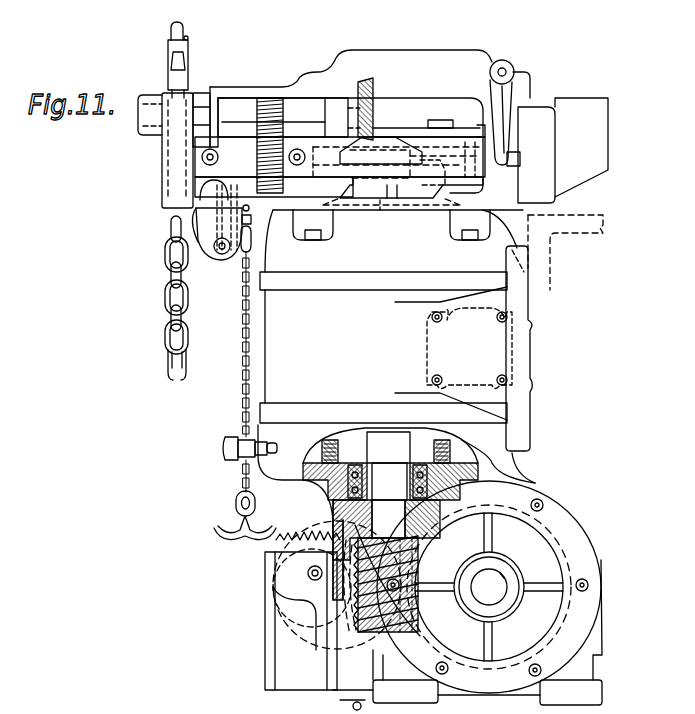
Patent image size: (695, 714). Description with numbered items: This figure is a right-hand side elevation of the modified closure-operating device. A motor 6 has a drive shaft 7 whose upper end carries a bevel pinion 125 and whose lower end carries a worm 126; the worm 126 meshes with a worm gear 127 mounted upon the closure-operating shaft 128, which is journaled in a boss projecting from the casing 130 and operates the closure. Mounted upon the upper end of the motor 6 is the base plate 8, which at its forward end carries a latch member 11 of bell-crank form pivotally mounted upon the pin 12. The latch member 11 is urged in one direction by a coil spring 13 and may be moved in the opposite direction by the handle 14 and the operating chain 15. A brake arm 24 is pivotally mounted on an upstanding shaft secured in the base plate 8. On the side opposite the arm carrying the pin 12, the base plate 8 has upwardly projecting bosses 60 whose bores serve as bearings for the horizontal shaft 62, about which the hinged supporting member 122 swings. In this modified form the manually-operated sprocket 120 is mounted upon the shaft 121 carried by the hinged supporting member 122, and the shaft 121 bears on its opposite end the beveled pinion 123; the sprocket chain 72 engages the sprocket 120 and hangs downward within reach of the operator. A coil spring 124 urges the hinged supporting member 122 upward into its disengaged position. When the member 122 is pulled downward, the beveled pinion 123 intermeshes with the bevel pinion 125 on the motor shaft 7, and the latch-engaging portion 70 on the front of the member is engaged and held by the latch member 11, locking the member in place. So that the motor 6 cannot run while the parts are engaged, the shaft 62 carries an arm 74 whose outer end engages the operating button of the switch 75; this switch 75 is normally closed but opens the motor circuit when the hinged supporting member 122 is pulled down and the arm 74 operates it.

The motor 6 is at (372, 322).
The drive shaft 7 is at (398, 202).
The base plate 8 is at (372, 200).
The latch member 11 is at (222, 192).
The pin 12 is at (226, 258).
The coil spring 13 is at (252, 222).
The handle 14 is at (224, 522).
The operating chain 15 is at (243, 412).
The brake arm 24 is at (446, 179).
The bosses 60 is at (525, 107).
The horizontal shaft 62 is at (505, 69).
The latch-engaging portion 70 is at (197, 155).
The sprocket chain 72 is at (172, 38).
The arm 74 is at (503, 133).
The switch 75 is at (545, 112).
The manually-operated sprocket 120 is at (185, 72).
The shaft 121 is at (238, 108).
The hinged supporting member 122 is at (384, 62).
The beveled pinion 123 is at (374, 91).
The coil spring 124 is at (273, 108).
The bevel pinion 125 is at (410, 140).
The worm 126 is at (388, 540).
The worm gear 127 is at (508, 554).
The closure-operating shaft 128 is at (500, 584).
The casing 130 is at (530, 482).